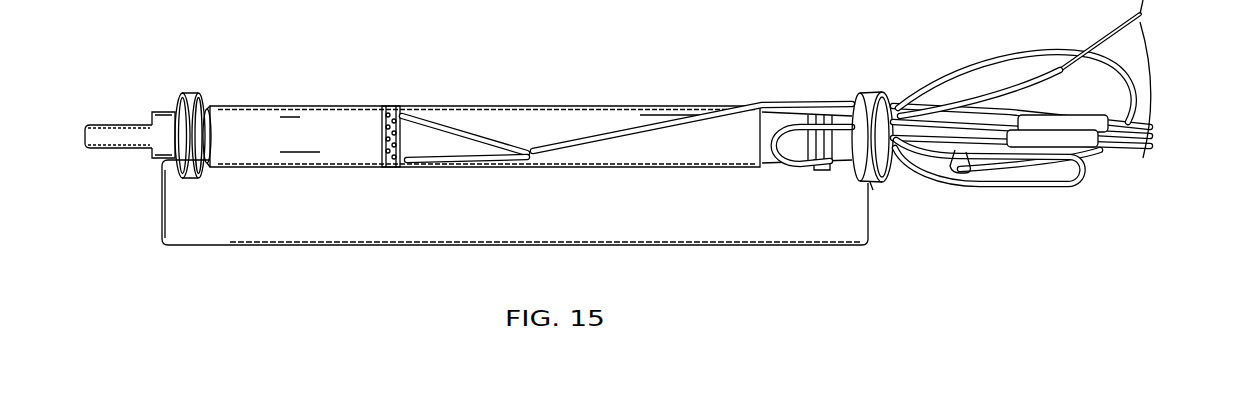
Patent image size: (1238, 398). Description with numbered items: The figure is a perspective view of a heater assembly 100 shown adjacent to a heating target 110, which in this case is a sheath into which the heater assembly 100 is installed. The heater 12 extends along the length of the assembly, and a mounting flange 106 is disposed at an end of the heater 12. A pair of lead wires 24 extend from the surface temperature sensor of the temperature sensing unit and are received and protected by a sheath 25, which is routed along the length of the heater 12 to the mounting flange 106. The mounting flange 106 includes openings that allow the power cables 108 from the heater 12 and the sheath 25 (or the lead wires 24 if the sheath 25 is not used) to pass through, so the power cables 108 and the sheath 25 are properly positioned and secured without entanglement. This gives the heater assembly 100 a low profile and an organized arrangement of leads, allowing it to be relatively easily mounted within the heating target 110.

The heater 12 is at (280, 104).
The lead wires 24 is at (432, 123).
The sheath 25 is at (670, 130).
The heater assembly 100 is at (866, 40).
The mounting flange 106 is at (868, 187).
The power cables 108 is at (983, 156).
The heating target 110 is at (866, 234).